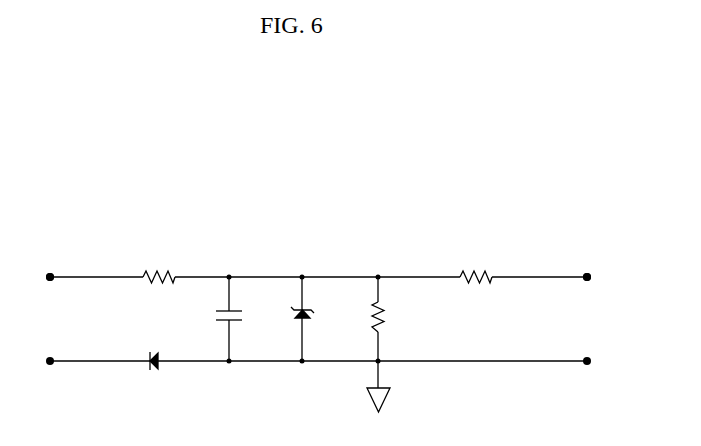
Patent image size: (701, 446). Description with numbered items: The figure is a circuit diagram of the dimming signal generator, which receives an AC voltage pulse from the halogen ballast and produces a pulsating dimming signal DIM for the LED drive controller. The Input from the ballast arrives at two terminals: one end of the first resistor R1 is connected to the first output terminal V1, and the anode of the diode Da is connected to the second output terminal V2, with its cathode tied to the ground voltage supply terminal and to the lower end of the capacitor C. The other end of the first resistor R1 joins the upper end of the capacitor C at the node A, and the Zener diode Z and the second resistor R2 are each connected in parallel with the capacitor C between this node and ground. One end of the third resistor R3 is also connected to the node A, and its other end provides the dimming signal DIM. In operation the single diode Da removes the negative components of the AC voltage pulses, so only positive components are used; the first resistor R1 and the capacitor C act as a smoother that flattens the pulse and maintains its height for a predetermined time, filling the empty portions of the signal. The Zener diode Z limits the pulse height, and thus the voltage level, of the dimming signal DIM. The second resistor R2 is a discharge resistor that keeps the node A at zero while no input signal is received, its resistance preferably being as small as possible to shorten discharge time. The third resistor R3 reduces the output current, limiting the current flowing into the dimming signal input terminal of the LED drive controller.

The first resistor R1 is at (159, 267).
The second resistor R2 is at (390, 319).
The third resistor R3 is at (476, 267).
The capacitor C is at (237, 319).
The Zener diode Z is at (309, 319).
The diode Da is at (156, 371).
The first output terminal V1 is at (38, 277).
The second output terminal V2 is at (38, 361).
The input Input is at (60, 266).
The dimming signal DIM is at (597, 266).
The node A is at (589, 289).